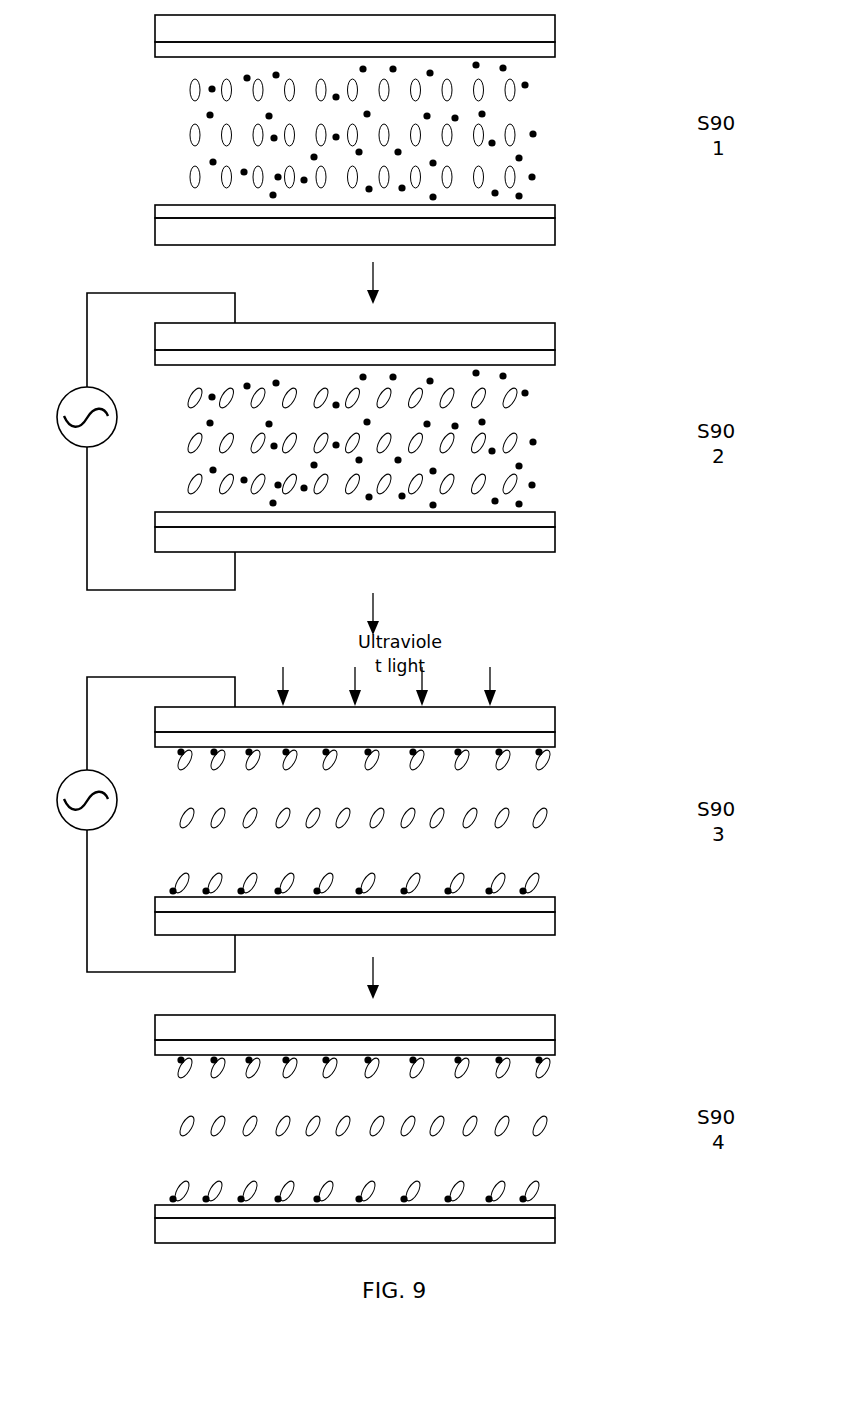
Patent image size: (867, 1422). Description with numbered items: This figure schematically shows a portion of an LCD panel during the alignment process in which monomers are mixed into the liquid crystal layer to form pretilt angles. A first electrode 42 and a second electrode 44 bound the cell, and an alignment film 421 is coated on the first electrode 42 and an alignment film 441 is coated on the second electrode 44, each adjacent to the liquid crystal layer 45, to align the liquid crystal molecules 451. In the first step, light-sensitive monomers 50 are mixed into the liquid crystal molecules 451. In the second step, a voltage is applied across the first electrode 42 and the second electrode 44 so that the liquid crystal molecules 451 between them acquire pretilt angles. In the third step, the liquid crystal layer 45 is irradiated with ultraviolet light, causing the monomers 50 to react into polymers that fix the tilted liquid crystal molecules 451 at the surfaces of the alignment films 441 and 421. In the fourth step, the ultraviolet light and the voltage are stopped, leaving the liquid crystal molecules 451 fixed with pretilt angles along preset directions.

The second electrode 44 is at (547, 25).
The alignment film 441 is at (547, 56).
The first electrode 42 is at (548, 243).
The alignment film 421 is at (549, 220).
The liquid crystal layer 45 is at (534, 167).
The liquid crystal molecules 451 is at (524, 92).
The monomers 50 is at (535, 135).